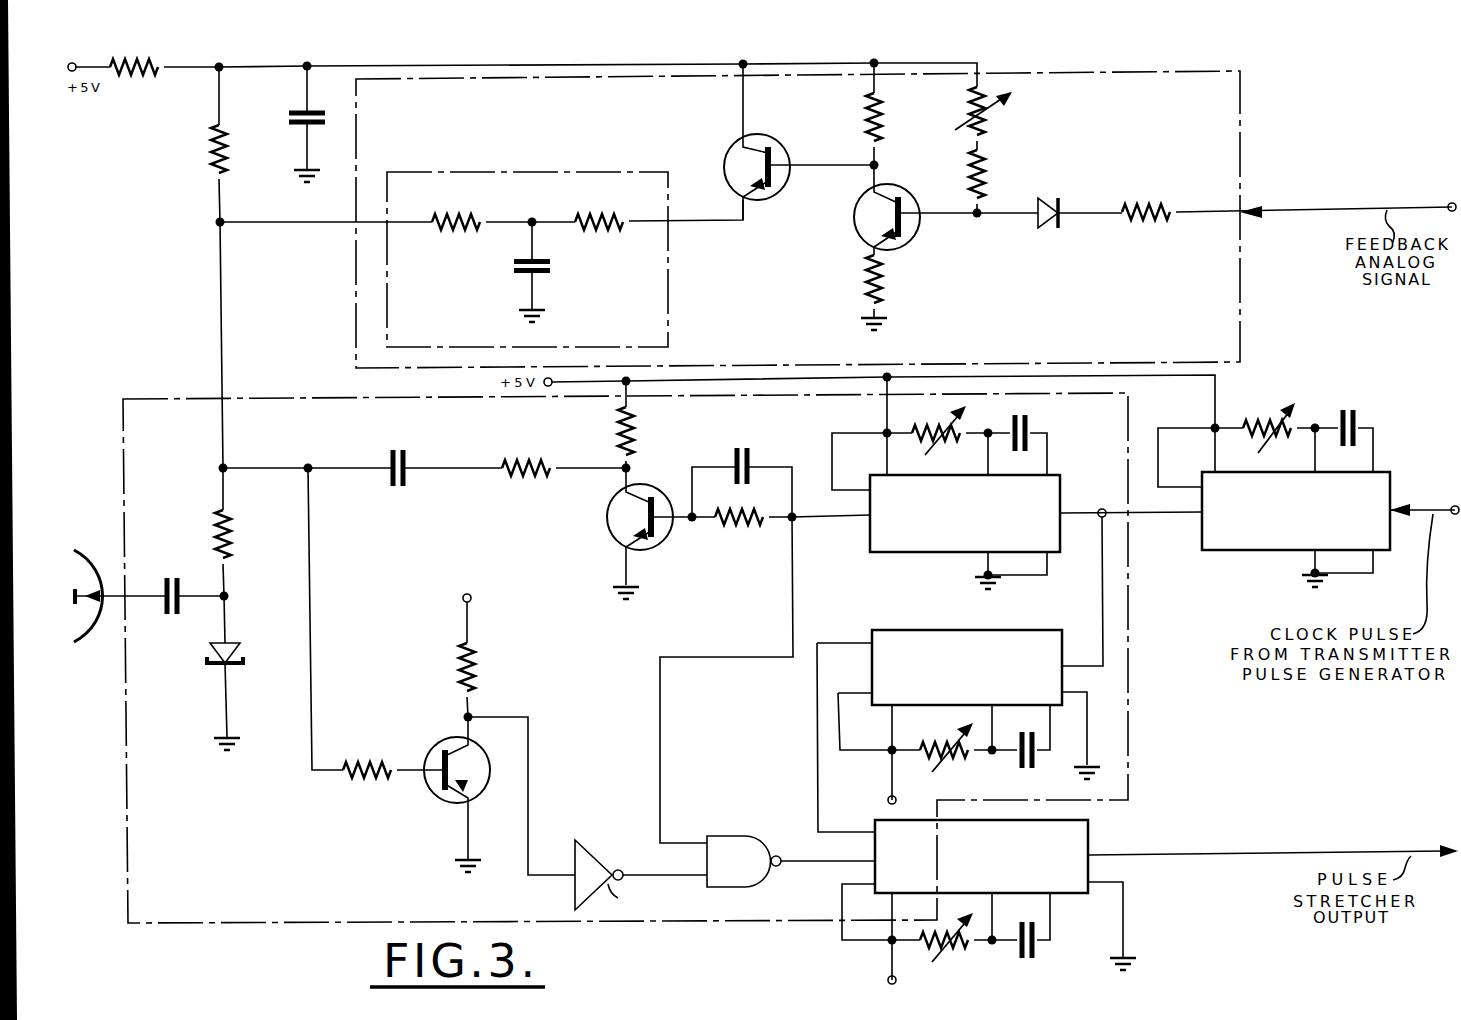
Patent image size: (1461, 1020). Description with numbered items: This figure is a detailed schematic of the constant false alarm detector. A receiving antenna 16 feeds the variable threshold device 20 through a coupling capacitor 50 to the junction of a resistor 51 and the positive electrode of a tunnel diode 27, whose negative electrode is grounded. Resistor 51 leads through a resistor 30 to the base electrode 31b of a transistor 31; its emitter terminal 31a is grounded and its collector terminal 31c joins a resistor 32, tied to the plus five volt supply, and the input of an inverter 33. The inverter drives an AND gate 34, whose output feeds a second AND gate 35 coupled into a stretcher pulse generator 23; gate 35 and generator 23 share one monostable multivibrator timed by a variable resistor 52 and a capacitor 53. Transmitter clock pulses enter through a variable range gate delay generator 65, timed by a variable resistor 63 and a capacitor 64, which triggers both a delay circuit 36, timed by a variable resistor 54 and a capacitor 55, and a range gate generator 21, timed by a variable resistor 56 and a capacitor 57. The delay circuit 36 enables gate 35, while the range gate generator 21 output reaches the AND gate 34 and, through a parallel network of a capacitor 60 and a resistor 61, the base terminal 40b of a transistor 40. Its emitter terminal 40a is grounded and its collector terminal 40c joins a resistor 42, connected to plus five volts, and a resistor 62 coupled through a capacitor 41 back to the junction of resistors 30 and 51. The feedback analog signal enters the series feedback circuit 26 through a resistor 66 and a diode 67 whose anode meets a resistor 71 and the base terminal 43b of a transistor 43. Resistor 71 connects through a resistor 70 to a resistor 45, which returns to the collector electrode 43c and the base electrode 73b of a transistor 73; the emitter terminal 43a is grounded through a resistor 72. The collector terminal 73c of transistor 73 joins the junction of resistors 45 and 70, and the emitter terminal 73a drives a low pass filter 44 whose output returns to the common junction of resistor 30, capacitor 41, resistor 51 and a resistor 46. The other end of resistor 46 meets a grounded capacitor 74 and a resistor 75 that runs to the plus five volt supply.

The receiving antenna 16 is at (99, 558).
The variable threshold device 20 is at (388, 610).
The range gate generator 21 is at (938, 552).
The stretcher pulse generator 23 is at (1092, 832).
The series feedback circuit 26 is at (356, 262).
The tunnel diode 27 is at (236, 646).
The resistor 30 is at (366, 787).
The transistor 31 is at (449, 791).
The emitter terminal 31a is at (456, 802).
The base electrode 31b is at (434, 762).
The collector terminal 31c is at (460, 736).
The resistor 32 is at (474, 682).
The inverter 33 is at (584, 844).
The AND gate 34 is at (734, 836).
The second AND gate 35 is at (902, 822).
The delay circuit 36 is at (1040, 630).
The transistor 40 is at (643, 526).
The emitter terminal 40a is at (620, 540).
The base terminal 40b is at (682, 532).
The collector terminal 40c is at (651, 490).
The capacitor 41 is at (401, 452).
The resistor 42 is at (634, 442).
The transistor 43 is at (883, 216).
The emitter terminal 43a is at (892, 247).
The base terminal 43b is at (906, 228).
The collector electrode 43c is at (894, 192).
The low pass filter 44 is at (598, 172).
The resistor 45 is at (880, 120).
The resistor 46 is at (214, 159).
The capacitor 50 is at (172, 576).
The resistor 51 is at (232, 522).
The variable resistor 52 is at (958, 956).
The capacitor 53 is at (1040, 960).
The variable resistor 54 is at (956, 758).
The capacitor 55 is at (1033, 760).
The variable resistor 56 is at (960, 426).
The capacitor 57 is at (1030, 426).
The capacitor 60 is at (748, 455).
The resistor 61 is at (758, 527).
The resistor 62 is at (528, 460).
The variable resistor 63 is at (1268, 424).
The capacitor 64 is at (1358, 414).
The variable range gate delay generator 65 is at (1260, 552).
The resistor 66 is at (1150, 206).
The diode 67 is at (1062, 224).
The resistor 70 is at (993, 116).
The resistor 71 is at (990, 182).
The resistor 72 is at (872, 282).
The transistor 73 is at (782, 146).
The emitter terminal 73a is at (760, 194).
The base electrode 73b is at (789, 162).
The collector terminal 73c is at (753, 147).
The capacitor 74 is at (295, 113).
The resistor 75 is at (137, 75).